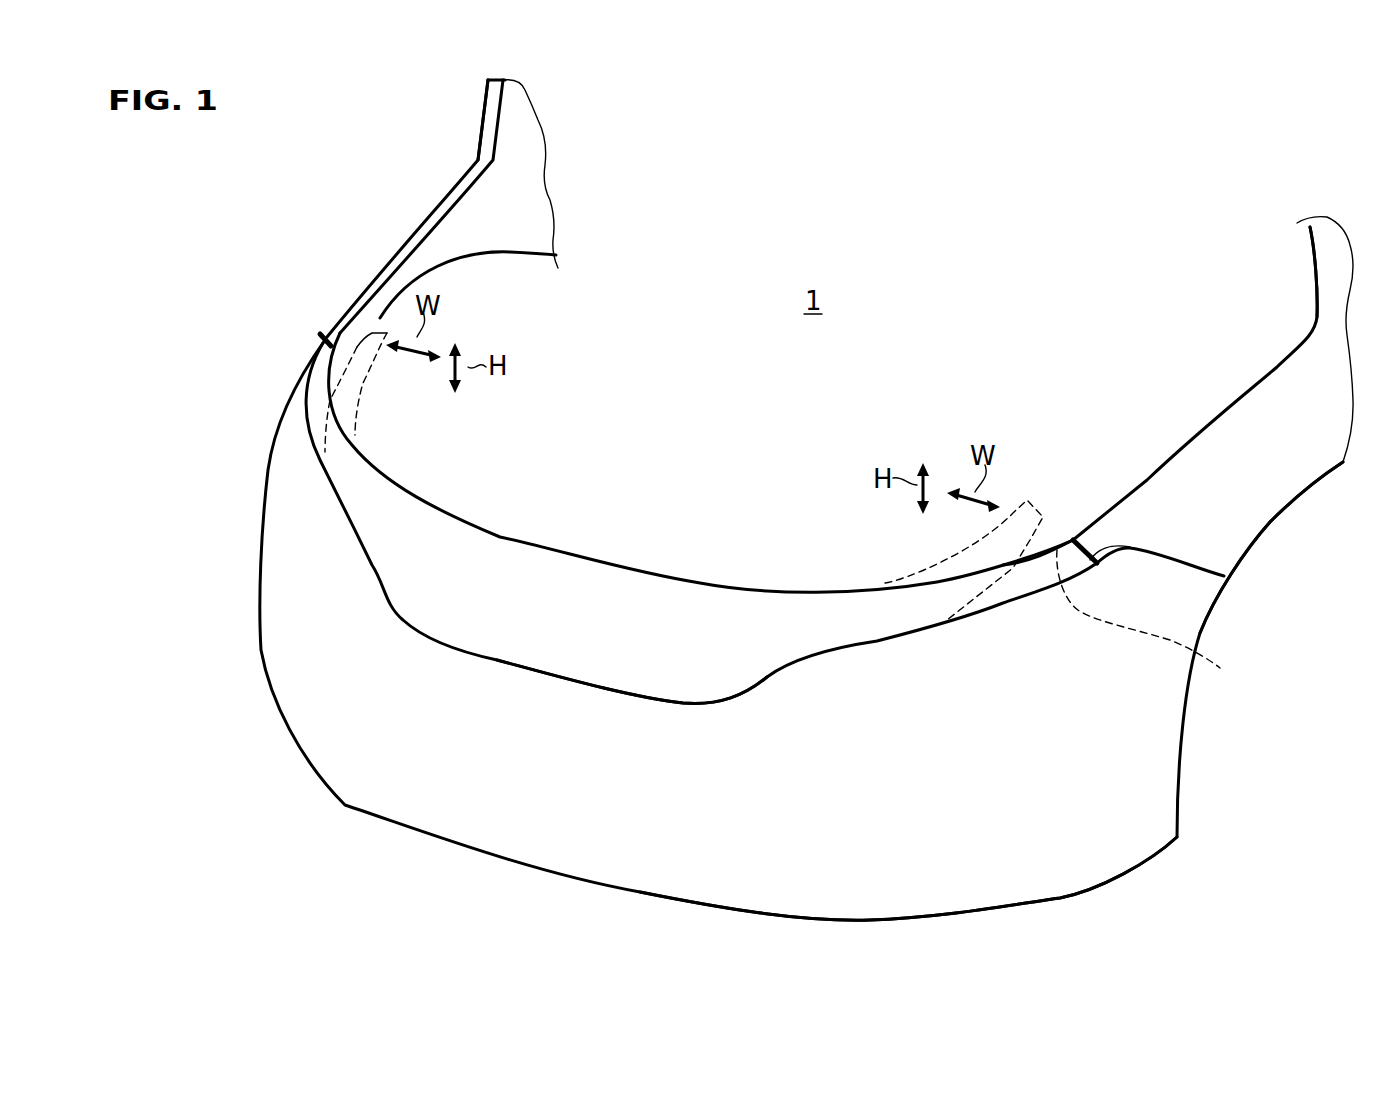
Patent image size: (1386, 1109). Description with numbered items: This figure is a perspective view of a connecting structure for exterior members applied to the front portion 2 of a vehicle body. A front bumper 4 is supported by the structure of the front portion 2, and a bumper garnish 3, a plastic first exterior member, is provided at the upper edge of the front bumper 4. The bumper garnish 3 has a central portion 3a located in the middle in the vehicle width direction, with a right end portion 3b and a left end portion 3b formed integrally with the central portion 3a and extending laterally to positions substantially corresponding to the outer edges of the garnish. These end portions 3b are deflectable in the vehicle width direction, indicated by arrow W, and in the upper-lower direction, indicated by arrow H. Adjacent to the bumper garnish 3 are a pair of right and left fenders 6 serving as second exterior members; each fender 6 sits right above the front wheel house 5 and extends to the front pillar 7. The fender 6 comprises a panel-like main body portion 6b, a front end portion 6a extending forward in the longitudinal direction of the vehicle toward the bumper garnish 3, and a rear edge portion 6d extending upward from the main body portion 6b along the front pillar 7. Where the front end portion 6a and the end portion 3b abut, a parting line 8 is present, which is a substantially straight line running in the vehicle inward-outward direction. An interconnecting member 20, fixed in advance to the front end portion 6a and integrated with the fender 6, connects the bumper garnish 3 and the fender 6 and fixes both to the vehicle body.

The front portion 2 is at (503, 880).
The bumper garnish 3 is at (544, 528).
The central portion 3a is at (582, 585).
The end portion 3b is at (310, 356).
The front bumper 4 is at (998, 877).
The front wheel house 5 is at (1238, 590).
The fender 6 is at (383, 247).
The front end portion 6a is at (327, 333).
The main body portion 6b is at (507, 230).
The rear edge portion 6d is at (478, 140).
The front pillar 7 is at (478, 99).
The parting line 8 is at (317, 337).
The interconnecting member 20 is at (1152, 616).